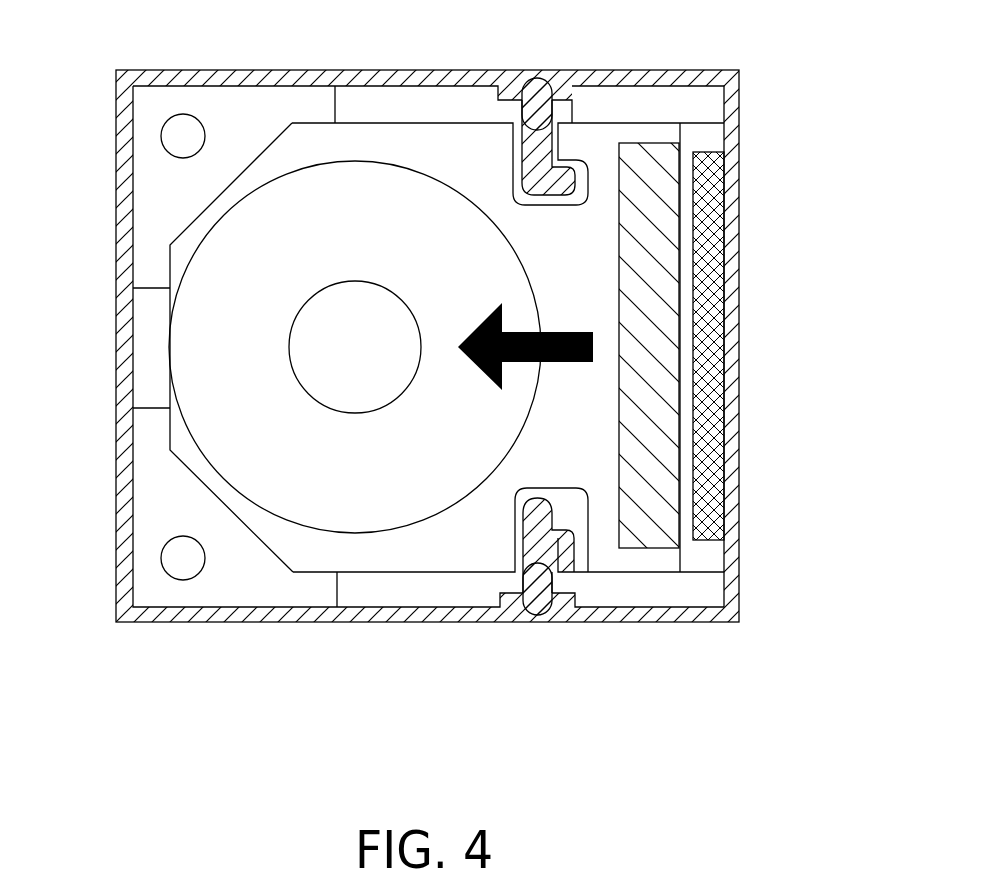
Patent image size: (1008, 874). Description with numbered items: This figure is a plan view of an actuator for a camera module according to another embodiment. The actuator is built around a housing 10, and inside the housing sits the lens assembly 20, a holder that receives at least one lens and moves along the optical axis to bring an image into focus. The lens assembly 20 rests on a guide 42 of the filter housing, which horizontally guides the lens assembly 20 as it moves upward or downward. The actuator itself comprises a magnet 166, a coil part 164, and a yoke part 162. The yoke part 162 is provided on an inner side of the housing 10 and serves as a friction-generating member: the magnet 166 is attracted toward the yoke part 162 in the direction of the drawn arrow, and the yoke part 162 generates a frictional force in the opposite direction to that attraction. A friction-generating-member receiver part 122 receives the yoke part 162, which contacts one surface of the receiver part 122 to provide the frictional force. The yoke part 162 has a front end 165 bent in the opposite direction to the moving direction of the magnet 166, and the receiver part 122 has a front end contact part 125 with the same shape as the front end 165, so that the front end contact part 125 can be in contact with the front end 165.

The housing 10 is at (122, 353).
The lens assembly 20 is at (395, 562).
The guide 42 is at (227, 593).
The friction-generating-member receiver part 122 is at (520, 133).
The front end contact part 125 is at (563, 167).
The yoke part 162 is at (537, 607).
The front end 165 is at (568, 545).
The magnet 166 is at (672, 243).
The coil part 164 is at (717, 317).